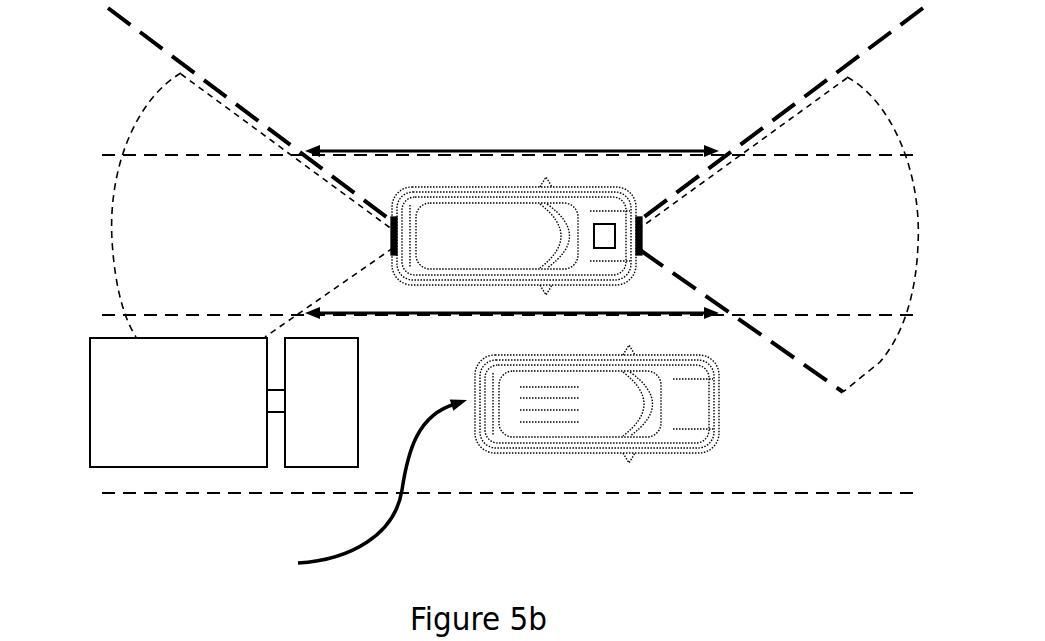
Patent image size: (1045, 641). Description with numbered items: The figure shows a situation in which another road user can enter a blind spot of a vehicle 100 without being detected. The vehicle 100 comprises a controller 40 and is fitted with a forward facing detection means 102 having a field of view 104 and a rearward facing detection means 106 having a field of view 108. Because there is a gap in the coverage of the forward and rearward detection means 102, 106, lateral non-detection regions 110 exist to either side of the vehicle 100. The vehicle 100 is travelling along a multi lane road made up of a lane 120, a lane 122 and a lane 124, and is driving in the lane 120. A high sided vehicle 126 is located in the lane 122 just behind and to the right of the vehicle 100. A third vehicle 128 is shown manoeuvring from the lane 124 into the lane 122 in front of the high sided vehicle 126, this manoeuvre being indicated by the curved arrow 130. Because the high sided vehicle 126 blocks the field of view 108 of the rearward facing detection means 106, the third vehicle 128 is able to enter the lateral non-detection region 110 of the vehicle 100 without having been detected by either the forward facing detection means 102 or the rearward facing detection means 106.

The controller 40 is at (615, 236).
The vehicle 100 is at (514, 236).
The forward facing detection means 102 is at (643, 240).
The field of view 104 is at (917, 263).
The rearward facing detection means 106 is at (390, 228).
The field of view 108 is at (112, 238).
The lateral non-detection region 110 is at (455, 340).
The lane 120 is at (83, 248).
The lane 122 is at (845, 425).
The lane 124 is at (845, 528).
The high sided vehicle 126 is at (202, 435).
The third vehicle 128 is at (563, 453).
The lane change trajectory 130 is at (388, 525).